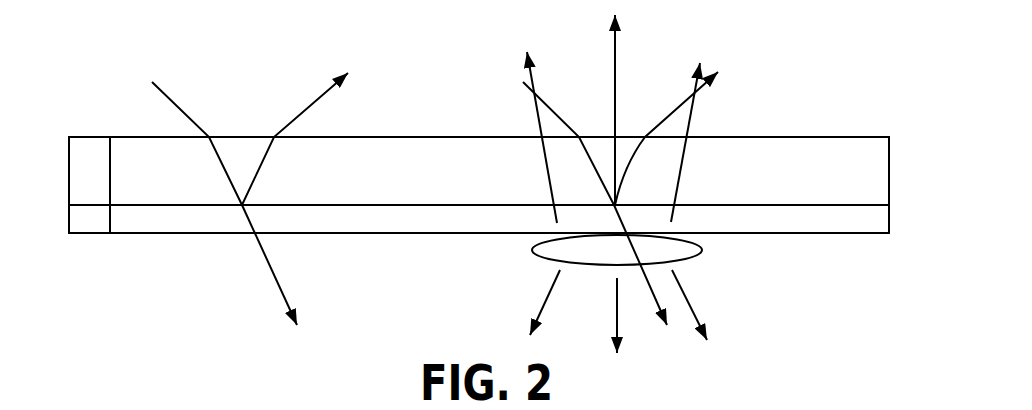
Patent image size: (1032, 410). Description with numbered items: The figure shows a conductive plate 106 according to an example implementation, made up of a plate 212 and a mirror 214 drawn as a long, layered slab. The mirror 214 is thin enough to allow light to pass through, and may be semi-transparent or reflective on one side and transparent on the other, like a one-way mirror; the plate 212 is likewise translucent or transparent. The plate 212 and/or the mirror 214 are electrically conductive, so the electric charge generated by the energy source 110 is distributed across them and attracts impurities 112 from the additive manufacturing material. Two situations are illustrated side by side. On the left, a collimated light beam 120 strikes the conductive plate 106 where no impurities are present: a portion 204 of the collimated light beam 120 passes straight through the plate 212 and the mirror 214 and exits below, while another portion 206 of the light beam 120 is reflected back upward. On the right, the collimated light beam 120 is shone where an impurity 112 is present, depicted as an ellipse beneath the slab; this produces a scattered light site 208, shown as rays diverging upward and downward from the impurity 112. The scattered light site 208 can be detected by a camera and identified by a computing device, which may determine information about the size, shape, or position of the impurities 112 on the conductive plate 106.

The conductive plate 106 is at (801, 100).
The energy source 110 is at (100, 141).
The impurity 112 is at (532, 249).
The collimated light beam 120 is at (183, 112).
The portion of the collimated light beam 204 is at (270, 270).
The portion of the light beam 206 is at (312, 97).
The scattered light site 208 is at (538, 119).
The plate 212 is at (110, 155).
The mirror 214 is at (110, 227).